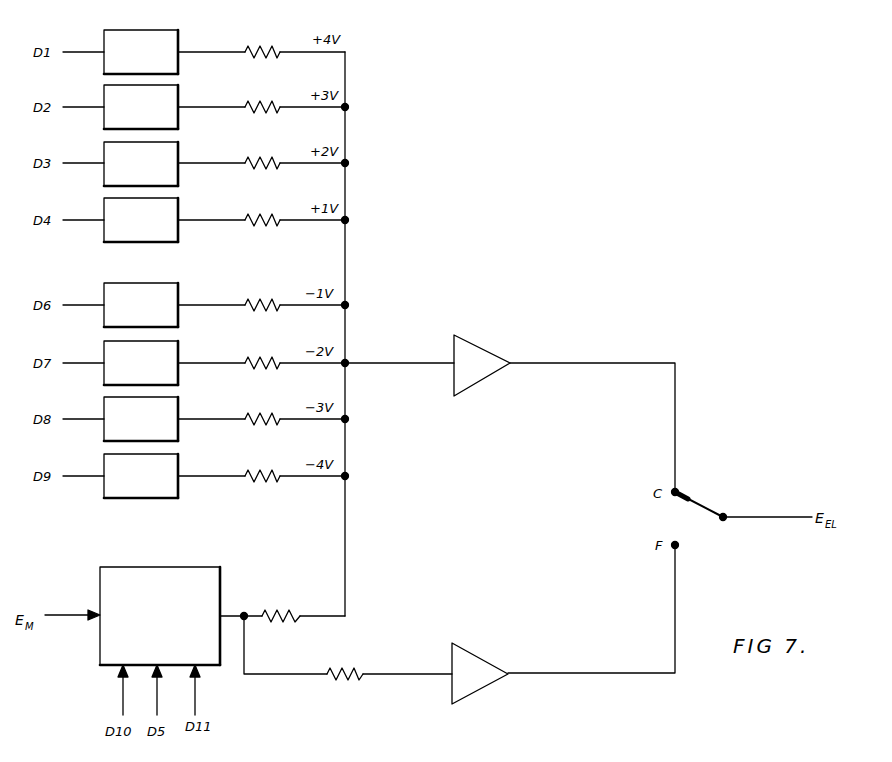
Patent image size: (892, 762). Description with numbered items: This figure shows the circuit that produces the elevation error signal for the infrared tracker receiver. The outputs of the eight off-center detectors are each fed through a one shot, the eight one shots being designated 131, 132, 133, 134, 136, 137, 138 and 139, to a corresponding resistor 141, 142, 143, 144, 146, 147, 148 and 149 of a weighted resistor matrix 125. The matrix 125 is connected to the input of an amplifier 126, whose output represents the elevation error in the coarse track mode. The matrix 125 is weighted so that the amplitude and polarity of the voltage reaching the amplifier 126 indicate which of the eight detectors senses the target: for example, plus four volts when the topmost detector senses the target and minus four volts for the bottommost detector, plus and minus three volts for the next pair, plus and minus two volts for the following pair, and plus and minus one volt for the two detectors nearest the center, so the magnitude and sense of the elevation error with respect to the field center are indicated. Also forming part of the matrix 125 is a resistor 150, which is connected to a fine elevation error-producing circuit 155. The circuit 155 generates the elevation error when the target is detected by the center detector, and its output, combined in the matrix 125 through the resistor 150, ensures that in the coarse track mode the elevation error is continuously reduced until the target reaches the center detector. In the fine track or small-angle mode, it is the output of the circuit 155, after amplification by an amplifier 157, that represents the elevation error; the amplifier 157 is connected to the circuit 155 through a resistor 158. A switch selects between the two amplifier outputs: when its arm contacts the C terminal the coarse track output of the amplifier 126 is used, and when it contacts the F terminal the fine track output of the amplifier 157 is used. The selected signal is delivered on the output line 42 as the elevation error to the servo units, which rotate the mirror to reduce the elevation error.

The one shot 131 is at (162, 28).
The one shot 132 is at (176, 85).
The one shot 133 is at (176, 142).
The one shot 134 is at (176, 198).
The one shot 136 is at (176, 283).
The one shot 137 is at (176, 341).
The one shot 138 is at (176, 397).
The one shot 139 is at (176, 454).
The resistor 141 is at (276, 48).
The resistor 142 is at (276, 103).
The resistor 143 is at (276, 159).
The resistor 144 is at (276, 216).
The resistor 146 is at (276, 301).
The resistor 147 is at (276, 359).
The resistor 148 is at (276, 415).
The resistor 149 is at (276, 472).
The weighted resistor matrix 125 is at (372, 254).
The amplifier 126 is at (472, 348).
The output line 42 is at (752, 515).
The fine elevation error-producing circuit 155 is at (207, 575).
The resistor 150 is at (278, 611).
The resistor 158 is at (357, 670).
The amplifier 157 is at (472, 660).